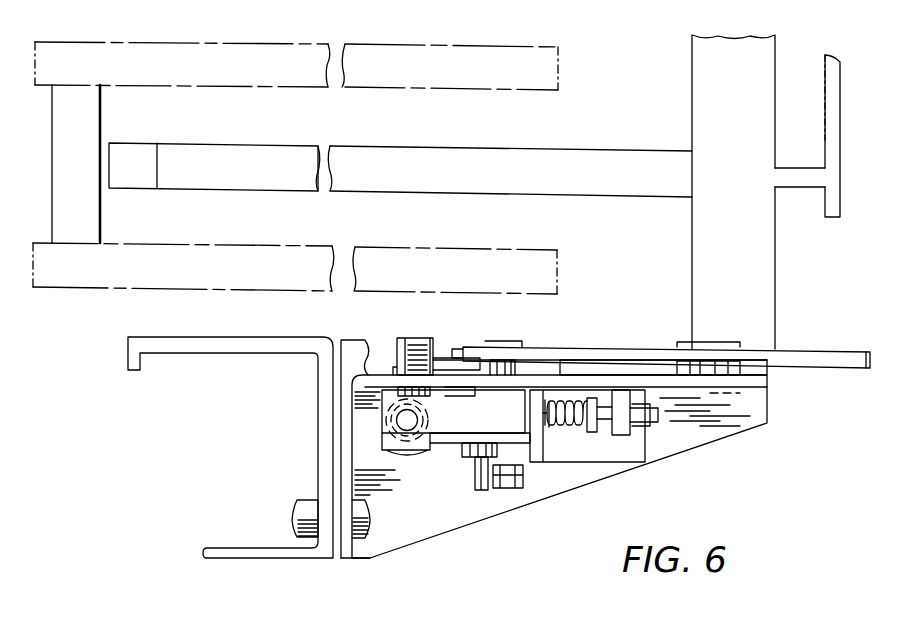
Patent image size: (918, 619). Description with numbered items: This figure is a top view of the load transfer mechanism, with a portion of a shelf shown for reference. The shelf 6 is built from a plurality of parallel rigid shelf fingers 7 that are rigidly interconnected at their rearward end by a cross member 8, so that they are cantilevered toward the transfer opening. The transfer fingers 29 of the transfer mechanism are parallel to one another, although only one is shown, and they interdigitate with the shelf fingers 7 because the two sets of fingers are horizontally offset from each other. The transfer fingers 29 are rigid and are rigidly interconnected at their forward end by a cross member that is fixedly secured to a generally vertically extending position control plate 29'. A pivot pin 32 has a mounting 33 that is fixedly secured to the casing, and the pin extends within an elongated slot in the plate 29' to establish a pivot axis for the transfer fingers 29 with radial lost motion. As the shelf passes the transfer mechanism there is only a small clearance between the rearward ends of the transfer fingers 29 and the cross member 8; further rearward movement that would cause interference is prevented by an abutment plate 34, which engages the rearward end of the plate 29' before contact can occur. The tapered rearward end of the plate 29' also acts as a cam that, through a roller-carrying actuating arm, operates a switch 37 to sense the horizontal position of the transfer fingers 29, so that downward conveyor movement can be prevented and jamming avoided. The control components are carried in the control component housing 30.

The shelf 6 is at (107, 288).
The shelf fingers 7 is at (548, 80).
The cross member 8 is at (95, 126).
The transfer fingers 29 is at (400, 156).
The position control plate 29' is at (661, 337).
The control component housing 30 is at (554, 478).
The pivot pin 32 is at (682, 345).
The mounting 33 is at (670, 372).
The abutment plate 34 is at (360, 340).
The switch 37 is at (408, 460).